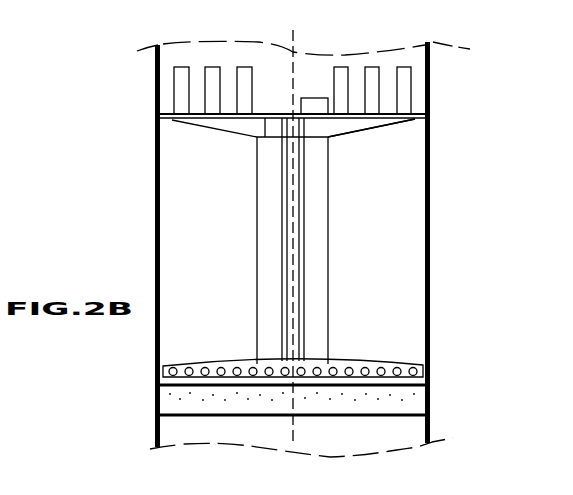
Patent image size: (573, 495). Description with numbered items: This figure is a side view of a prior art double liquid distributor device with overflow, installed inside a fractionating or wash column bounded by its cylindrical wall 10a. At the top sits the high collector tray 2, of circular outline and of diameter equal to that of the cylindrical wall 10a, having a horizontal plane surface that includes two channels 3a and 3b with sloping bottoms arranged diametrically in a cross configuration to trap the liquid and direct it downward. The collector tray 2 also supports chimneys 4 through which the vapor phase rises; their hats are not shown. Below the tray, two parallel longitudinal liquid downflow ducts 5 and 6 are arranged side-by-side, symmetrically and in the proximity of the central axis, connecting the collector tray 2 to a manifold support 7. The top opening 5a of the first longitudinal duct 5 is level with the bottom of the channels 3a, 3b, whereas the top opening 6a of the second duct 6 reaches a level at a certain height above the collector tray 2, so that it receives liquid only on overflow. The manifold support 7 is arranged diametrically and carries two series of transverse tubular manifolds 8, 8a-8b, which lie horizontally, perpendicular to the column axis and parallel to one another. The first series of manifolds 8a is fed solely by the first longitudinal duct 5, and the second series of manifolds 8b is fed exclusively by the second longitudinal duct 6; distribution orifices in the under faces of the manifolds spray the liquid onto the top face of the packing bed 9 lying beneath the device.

The collector tray 2 is at (412, 117).
The channel 3a is at (283, 133).
The channel 3b is at (352, 130).
The chimneys 4 is at (183, 80).
The first longitudinal liquid downflow duct 5 is at (267, 210).
The top opening of the first longitudinal duct 5a is at (262, 137).
The second longitudinal liquid downflow duct 6 is at (318, 210).
The top opening of the second duct 6a is at (317, 107).
The manifold support 7 is at (390, 366).
The transverse tubular manifolds 8 is at (293, 351).
The first series of manifolds 8a is at (173, 372).
The second series of manifolds 8b is at (413, 372).
The packing bed 9 is at (400, 407).
The cylindrical wall 10a is at (155, 167).